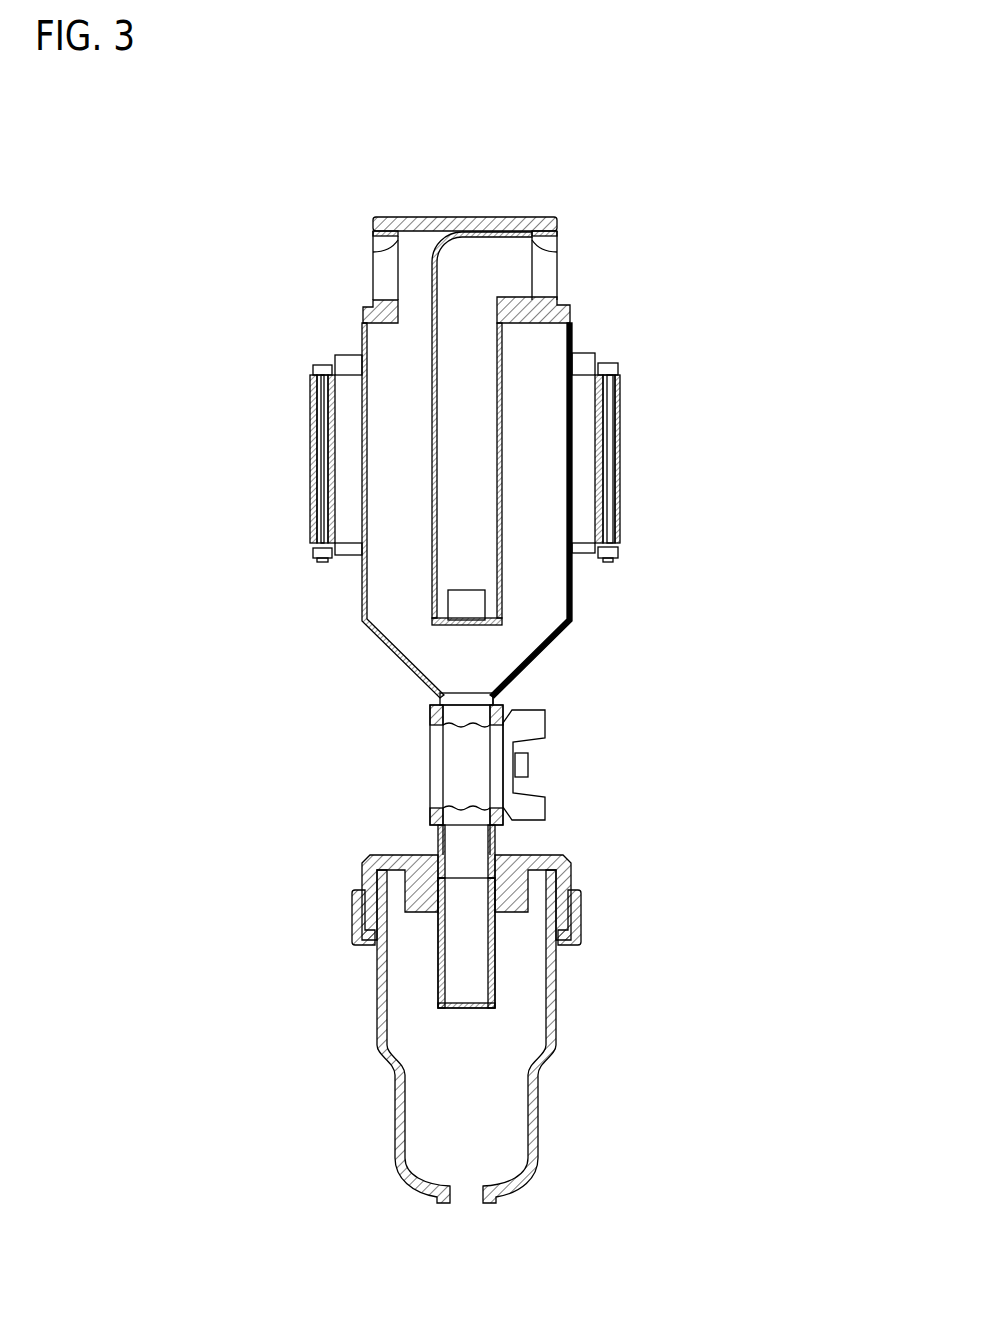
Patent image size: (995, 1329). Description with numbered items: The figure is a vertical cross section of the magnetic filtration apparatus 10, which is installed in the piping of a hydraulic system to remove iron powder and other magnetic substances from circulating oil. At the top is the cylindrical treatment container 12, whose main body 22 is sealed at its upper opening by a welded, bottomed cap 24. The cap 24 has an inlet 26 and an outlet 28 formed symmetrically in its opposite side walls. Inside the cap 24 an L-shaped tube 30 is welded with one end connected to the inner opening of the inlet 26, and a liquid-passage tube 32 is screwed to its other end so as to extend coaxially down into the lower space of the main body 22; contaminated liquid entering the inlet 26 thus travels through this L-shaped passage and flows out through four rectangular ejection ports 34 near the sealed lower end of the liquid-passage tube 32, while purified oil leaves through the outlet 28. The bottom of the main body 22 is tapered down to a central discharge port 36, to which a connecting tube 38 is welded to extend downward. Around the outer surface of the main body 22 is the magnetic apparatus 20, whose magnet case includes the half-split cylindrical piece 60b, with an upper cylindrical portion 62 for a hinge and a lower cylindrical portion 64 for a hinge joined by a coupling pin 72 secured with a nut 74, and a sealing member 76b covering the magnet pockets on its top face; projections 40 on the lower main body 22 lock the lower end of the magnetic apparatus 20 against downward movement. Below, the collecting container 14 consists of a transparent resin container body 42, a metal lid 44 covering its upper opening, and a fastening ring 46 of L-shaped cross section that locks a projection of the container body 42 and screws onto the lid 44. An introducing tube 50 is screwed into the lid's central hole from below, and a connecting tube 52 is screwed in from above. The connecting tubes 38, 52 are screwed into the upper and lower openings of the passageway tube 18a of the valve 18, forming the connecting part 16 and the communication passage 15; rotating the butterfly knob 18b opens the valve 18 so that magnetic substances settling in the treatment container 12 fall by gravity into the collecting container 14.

The magnetic filtration apparatus 10 is at (650, 196).
The treatment container 12 is at (582, 610).
The collecting container 14 is at (567, 1019).
The communication passage 15 is at (467, 710).
The connecting part 16 is at (437, 838).
The valve 18 is at (564, 768).
The passageway tube 18a is at (450, 764).
The butterfly knob 18b is at (541, 806).
The magnetic apparatus 20 is at (646, 392).
The main body 22 is at (573, 585).
The cap 24 is at (421, 215).
The inlet 26 is at (560, 246).
The outlet 28 is at (378, 244).
The L-shaped tube 30 is at (425, 270).
The liquid-passage tube 32 is at (505, 355).
The ejection ports 34 is at (465, 603).
The discharge port 36 is at (465, 692).
The connecting tube on the treatment-container side 38 is at (500, 697).
The projections 40 is at (355, 552).
The container body 42 is at (538, 1115).
The lid 44 is at (364, 870).
The fastening ring 46 is at (353, 933).
The introducing tube 50 is at (497, 955).
The connecting tube on the collecting-container side 52 is at (497, 838).
The half-split cylindrical piece 60b is at (348, 431).
The upper cylindrical portion for a hinge 62 is at (314, 407).
The lower cylindrical portion for a hinge 64 is at (313, 500).
The coupling pin 72 is at (322, 365).
The nut 74 is at (314, 553).
The sealing member 76b is at (355, 363).